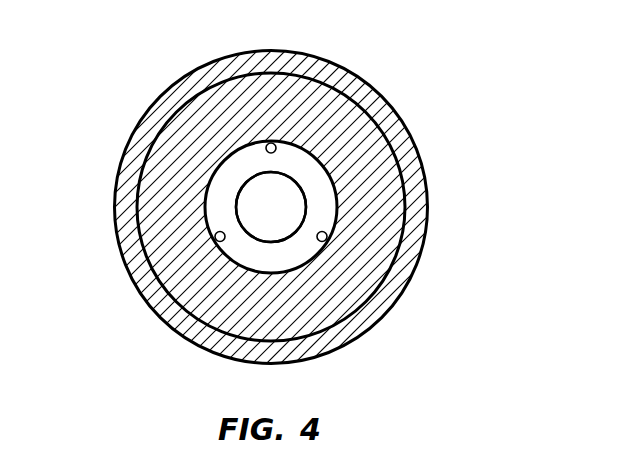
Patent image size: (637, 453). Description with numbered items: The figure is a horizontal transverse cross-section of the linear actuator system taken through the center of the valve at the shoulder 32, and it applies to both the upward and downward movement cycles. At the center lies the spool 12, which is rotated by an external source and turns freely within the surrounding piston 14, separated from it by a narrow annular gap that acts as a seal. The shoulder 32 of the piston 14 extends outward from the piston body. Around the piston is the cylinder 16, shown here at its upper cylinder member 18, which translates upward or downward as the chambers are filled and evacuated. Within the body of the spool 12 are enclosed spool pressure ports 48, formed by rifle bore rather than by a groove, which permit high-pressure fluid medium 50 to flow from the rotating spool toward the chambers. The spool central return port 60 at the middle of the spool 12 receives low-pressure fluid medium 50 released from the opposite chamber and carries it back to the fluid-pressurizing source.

The spool 12 is at (293, 158).
The piston 14 is at (373, 258).
The cylinder 16 is at (388, 122).
The upper cylinder member 18 is at (415, 233).
The shoulder 32 is at (350, 125).
The spool pressure port 48 is at (269, 143).
The fluid medium 50 is at (256, 201).
The spool central return port 60 is at (283, 200).